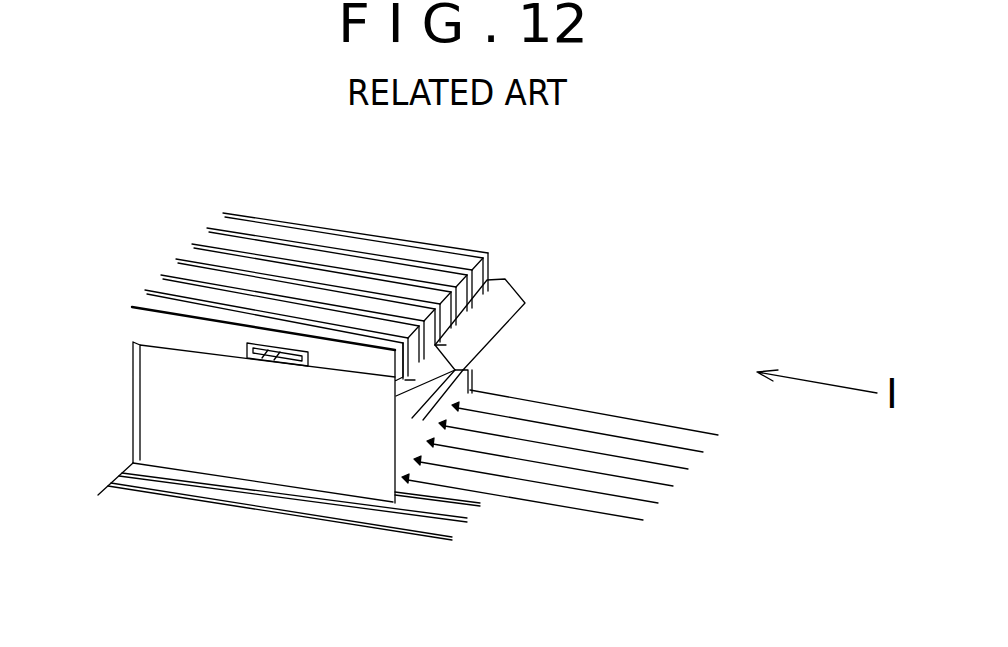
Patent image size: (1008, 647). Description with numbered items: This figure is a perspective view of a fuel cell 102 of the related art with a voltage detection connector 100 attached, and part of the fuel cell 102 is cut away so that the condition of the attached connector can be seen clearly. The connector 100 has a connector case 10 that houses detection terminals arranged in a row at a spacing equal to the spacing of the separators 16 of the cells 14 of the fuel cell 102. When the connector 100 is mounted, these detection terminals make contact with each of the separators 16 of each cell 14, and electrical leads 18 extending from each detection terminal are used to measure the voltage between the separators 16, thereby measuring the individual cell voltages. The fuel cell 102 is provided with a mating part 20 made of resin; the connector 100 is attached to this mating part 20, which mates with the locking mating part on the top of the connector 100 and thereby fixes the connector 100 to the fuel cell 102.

The connector case 10 is at (147, 383).
The cell 14 is at (457, 532).
The separator 16 is at (467, 520).
The electrical lead 18 is at (625, 422).
The mating part 20 is at (258, 356).
The connector 100 is at (503, 350).
The fuel cell 102 is at (237, 514).